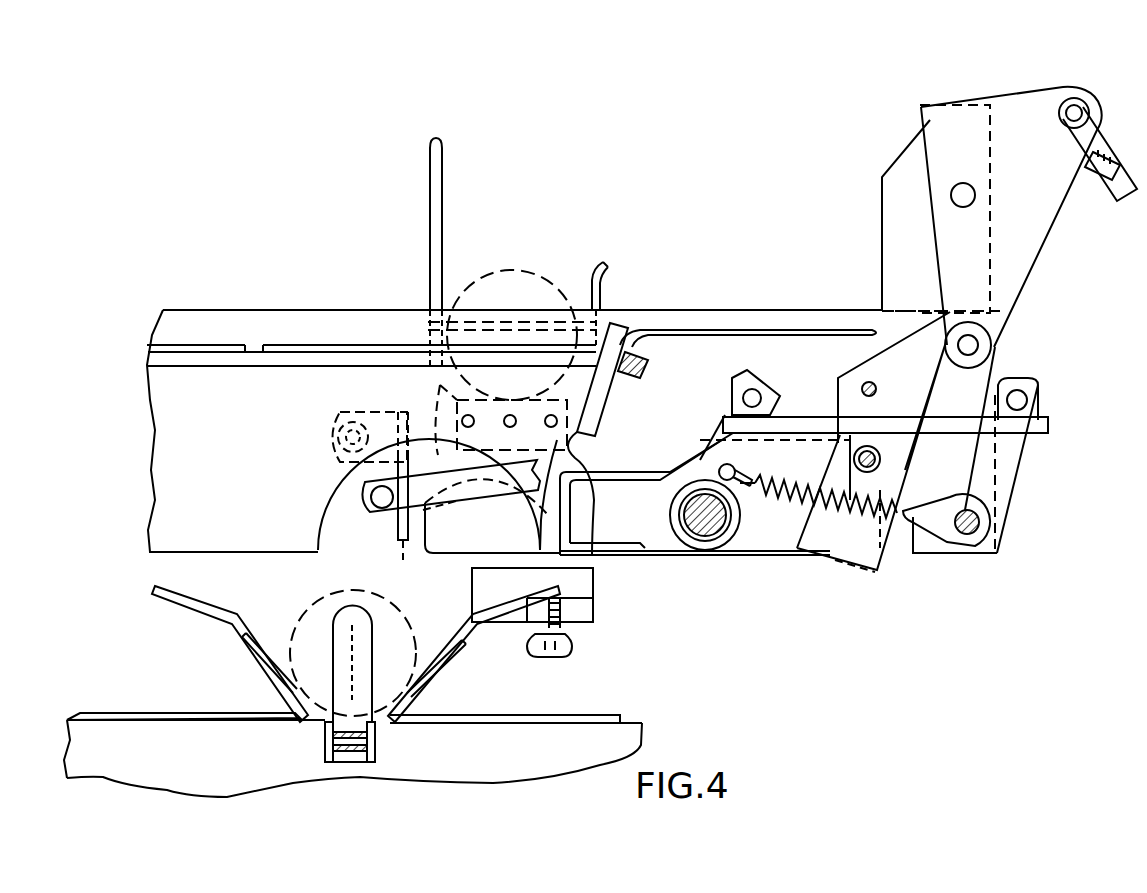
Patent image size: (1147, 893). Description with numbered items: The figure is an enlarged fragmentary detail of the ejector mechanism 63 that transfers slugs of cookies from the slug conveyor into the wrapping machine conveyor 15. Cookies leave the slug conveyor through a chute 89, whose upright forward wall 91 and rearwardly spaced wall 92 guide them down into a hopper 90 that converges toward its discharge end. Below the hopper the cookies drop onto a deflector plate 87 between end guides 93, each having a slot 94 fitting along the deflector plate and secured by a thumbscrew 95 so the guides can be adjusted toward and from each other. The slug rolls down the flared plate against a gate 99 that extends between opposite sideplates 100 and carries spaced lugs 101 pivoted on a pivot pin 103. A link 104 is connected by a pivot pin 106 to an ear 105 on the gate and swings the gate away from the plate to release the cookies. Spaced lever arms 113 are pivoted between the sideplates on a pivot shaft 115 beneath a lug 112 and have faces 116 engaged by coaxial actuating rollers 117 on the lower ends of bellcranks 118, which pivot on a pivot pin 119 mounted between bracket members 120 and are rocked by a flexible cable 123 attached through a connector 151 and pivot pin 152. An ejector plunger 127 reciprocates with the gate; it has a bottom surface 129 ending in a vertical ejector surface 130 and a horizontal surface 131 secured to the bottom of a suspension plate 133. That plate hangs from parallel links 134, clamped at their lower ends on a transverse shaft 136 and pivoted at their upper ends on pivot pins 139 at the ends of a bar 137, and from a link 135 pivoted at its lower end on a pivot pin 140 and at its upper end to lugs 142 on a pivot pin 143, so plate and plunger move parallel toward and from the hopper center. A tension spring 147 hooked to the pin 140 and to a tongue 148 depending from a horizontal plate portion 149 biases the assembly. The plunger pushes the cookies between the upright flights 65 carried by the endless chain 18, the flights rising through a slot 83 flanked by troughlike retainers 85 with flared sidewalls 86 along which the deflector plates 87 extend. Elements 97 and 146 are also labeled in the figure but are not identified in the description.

The wrapping machine conveyor 15 is at (329, 772).
The endless chain 18 is at (375, 768).
The ejector mechanism 63 is at (588, 556).
The flights 65 is at (372, 690).
The slot 83 is at (305, 725).
The troughlike retainers 85 is at (185, 712).
The flared sidewalls 86 is at (262, 668).
The deflector plates 87 is at (240, 612).
The chute 89 is at (426, 275).
The hopper 90 is at (428, 367).
The upright forward wall 91 is at (430, 216).
The rearwardly spaced wall 92 is at (604, 281).
The end guides 93 is at (593, 612).
The slot 94 is at (545, 593).
The thumbscrew 95 is at (572, 647).
The top plate 97 is at (185, 306).
The gate 99 is at (398, 533).
The sideplates 100 is at (178, 522).
The spaced lugs 101 is at (372, 410).
The pivot pin 103 is at (348, 438).
The link 104 is at (527, 470).
The ear 105 is at (365, 484).
The pivot pin 106 is at (371, 498).
The lug 112 is at (878, 384).
The lever arms 113 is at (882, 560).
The pivot shaft 115 is at (880, 458).
The faces 116 is at (970, 313).
The actuating rollers 117 is at (988, 332).
The bellcranks 118 is at (1030, 91).
The pivot pin 119 is at (963, 190).
The bracket members 120 is at (882, 168).
The flexible cable 123 is at (1105, 195).
The ejector plunger 127 is at (550, 533).
The bottom surface 129 is at (640, 545).
The vertical ejector surface 130 is at (538, 514).
The horizontal surface 131 is at (808, 432).
The suspension plate 133 is at (1048, 425).
The parallel links 134 is at (717, 412).
The link 135 is at (1030, 469).
The transverse shaft 136 is at (712, 530).
The bar 137 is at (765, 375).
The pivot pins 139 is at (695, 476).
The pivot pin 140 is at (985, 545).
The lugs 142 is at (1030, 378).
The pivot pin 143 is at (1027, 400).
The latch 146 is at (900, 510).
The tension spring 147 is at (895, 548).
The tongue 148 is at (762, 500).
The horizontal plate portion 149 is at (765, 447).
The connector 151 is at (1077, 145).
The pivot pin 152 is at (1063, 114).